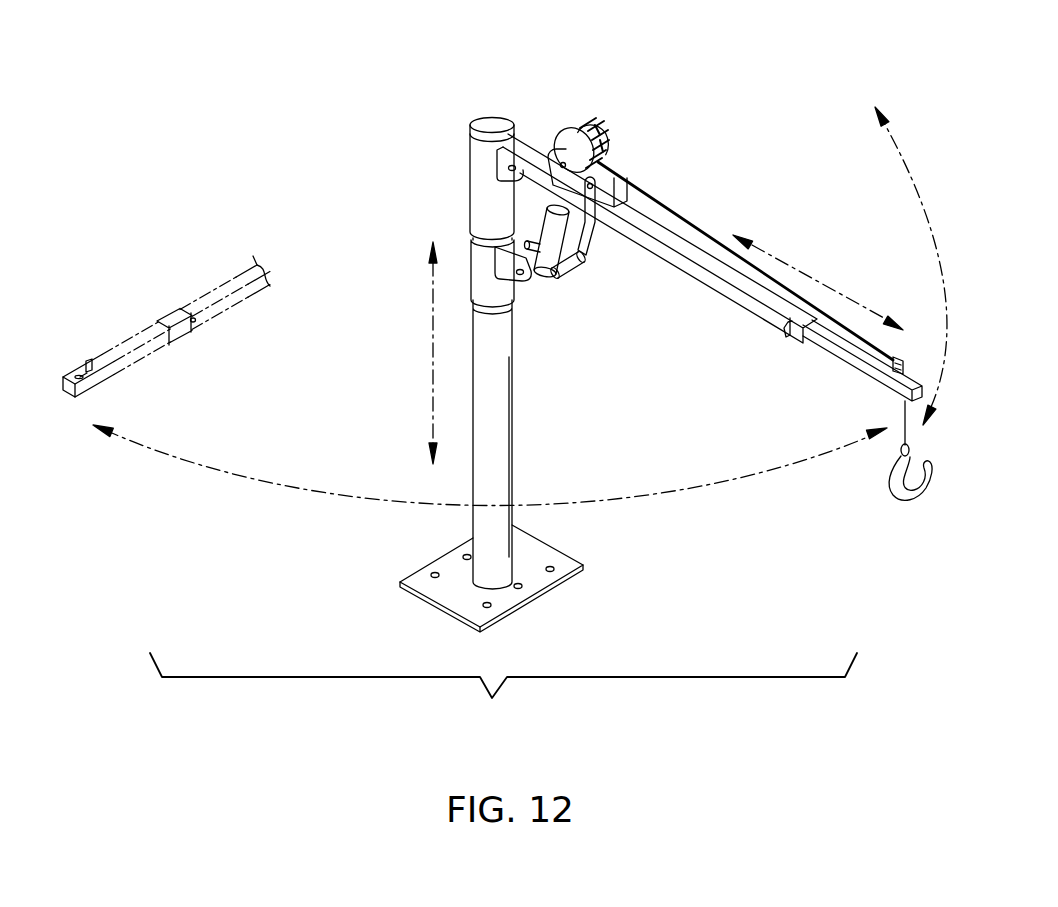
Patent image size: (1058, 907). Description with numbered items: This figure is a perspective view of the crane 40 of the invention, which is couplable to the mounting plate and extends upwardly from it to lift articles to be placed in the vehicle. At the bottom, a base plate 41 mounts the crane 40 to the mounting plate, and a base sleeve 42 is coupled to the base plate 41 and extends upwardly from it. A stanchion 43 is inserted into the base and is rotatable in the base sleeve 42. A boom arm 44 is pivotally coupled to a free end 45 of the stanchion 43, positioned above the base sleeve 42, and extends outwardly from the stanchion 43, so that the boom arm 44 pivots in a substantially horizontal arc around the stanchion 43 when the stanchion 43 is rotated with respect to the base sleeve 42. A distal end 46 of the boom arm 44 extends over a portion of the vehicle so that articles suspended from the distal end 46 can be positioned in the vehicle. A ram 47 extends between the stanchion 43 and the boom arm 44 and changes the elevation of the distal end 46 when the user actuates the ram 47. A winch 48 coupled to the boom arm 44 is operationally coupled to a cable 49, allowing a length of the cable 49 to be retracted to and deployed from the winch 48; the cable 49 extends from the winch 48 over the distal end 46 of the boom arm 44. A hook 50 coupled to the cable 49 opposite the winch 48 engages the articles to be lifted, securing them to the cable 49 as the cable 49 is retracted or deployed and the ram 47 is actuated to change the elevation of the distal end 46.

The crane 40 is at (480, 128).
The base plate 41 is at (567, 563).
The base sleeve 42 is at (497, 452).
The stanchion 43 is at (477, 290).
The boom arm 44 is at (747, 298).
The free end 45 is at (492, 120).
The distal end 46 is at (910, 378).
The ram 47 is at (543, 277).
The winch 48 is at (598, 166).
The cable 49 is at (686, 216).
The hook 50 is at (914, 497).